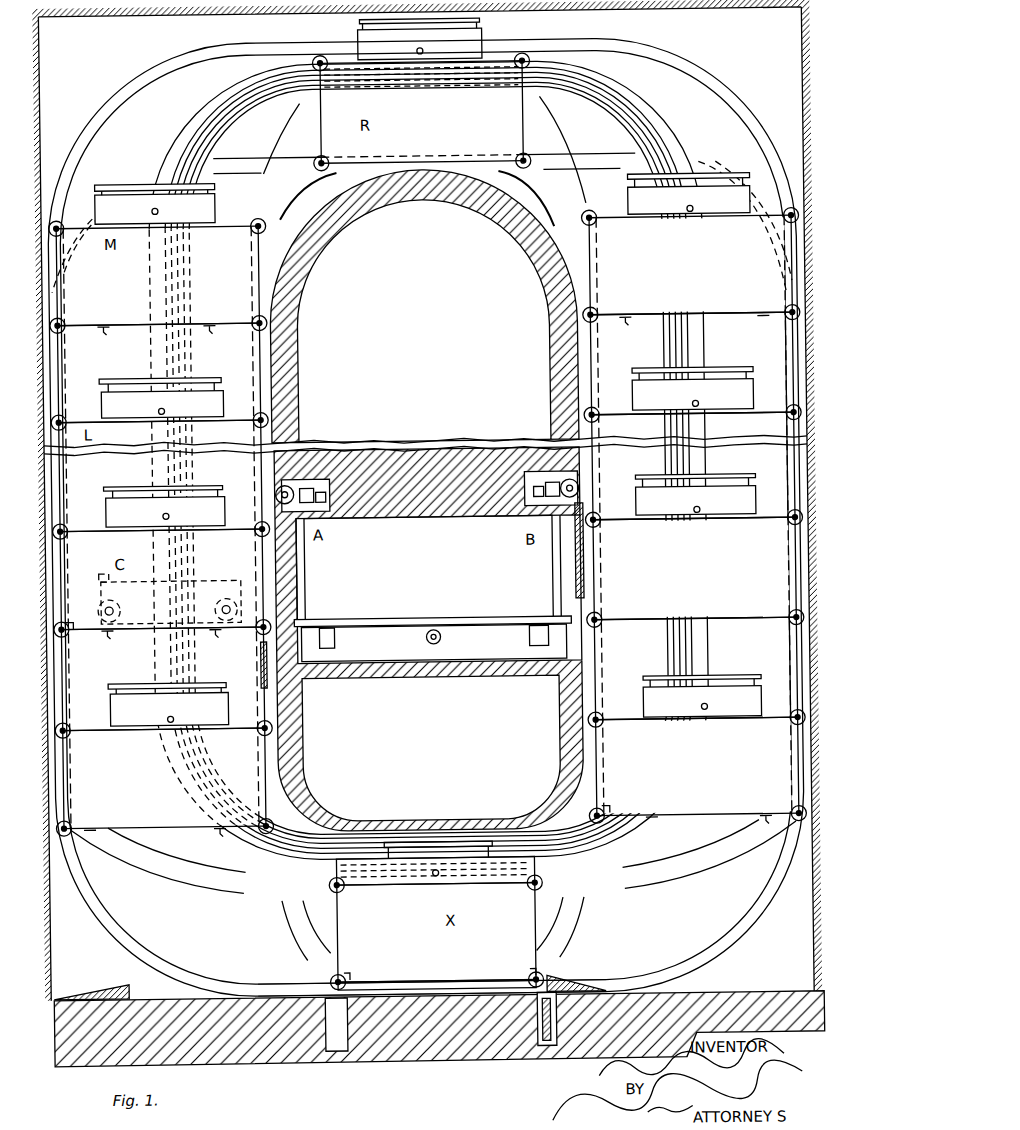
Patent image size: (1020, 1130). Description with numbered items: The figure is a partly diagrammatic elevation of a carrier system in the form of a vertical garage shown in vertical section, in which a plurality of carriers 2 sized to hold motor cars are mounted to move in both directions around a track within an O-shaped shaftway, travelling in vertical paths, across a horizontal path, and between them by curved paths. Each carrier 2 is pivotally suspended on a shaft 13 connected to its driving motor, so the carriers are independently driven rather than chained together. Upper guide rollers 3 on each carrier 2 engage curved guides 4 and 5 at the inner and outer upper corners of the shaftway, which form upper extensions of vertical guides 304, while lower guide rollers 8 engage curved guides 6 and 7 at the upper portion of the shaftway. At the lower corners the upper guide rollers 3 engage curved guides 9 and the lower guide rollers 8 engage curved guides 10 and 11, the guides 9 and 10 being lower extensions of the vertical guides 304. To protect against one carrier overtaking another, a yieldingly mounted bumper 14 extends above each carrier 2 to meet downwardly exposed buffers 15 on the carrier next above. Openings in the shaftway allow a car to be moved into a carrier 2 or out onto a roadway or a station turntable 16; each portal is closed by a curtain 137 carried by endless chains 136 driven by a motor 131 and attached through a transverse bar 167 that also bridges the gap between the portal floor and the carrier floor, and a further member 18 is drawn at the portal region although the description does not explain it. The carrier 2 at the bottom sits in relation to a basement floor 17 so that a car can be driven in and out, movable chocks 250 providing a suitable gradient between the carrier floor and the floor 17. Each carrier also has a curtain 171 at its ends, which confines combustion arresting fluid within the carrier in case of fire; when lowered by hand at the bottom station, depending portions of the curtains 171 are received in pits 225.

The carrier 2 is at (427, 504).
The upper guide roller 3 is at (257, 230).
The curved guide 4 is at (274, 143).
The curved guide 5 is at (128, 96).
The curved guide 6 is at (424, 192).
The curved guide 7 is at (760, 196).
The lower guide roller 8 is at (68, 622).
The curved guide 9 is at (184, 862).
The curved guide 10 is at (165, 966).
The curved guide 11 is at (295, 928).
The shaft 13 is at (160, 411).
The bumper 14 is at (114, 376).
The buffer 15 is at (426, 591).
The turntable 16 is at (384, 617).
The floor 17 is at (152, 996).
The bracket bar 18 is at (298, 618).
The motor 131 is at (325, 505).
The chain 136 is at (277, 489).
The curtain 137 is at (574, 584).
The transverse bar 167 is at (305, 578).
The carrier curtain 171 is at (258, 671).
The pit 225 is at (331, 1050).
The movable chock 250 is at (100, 985).
The vertical guide 304 is at (68, 360).